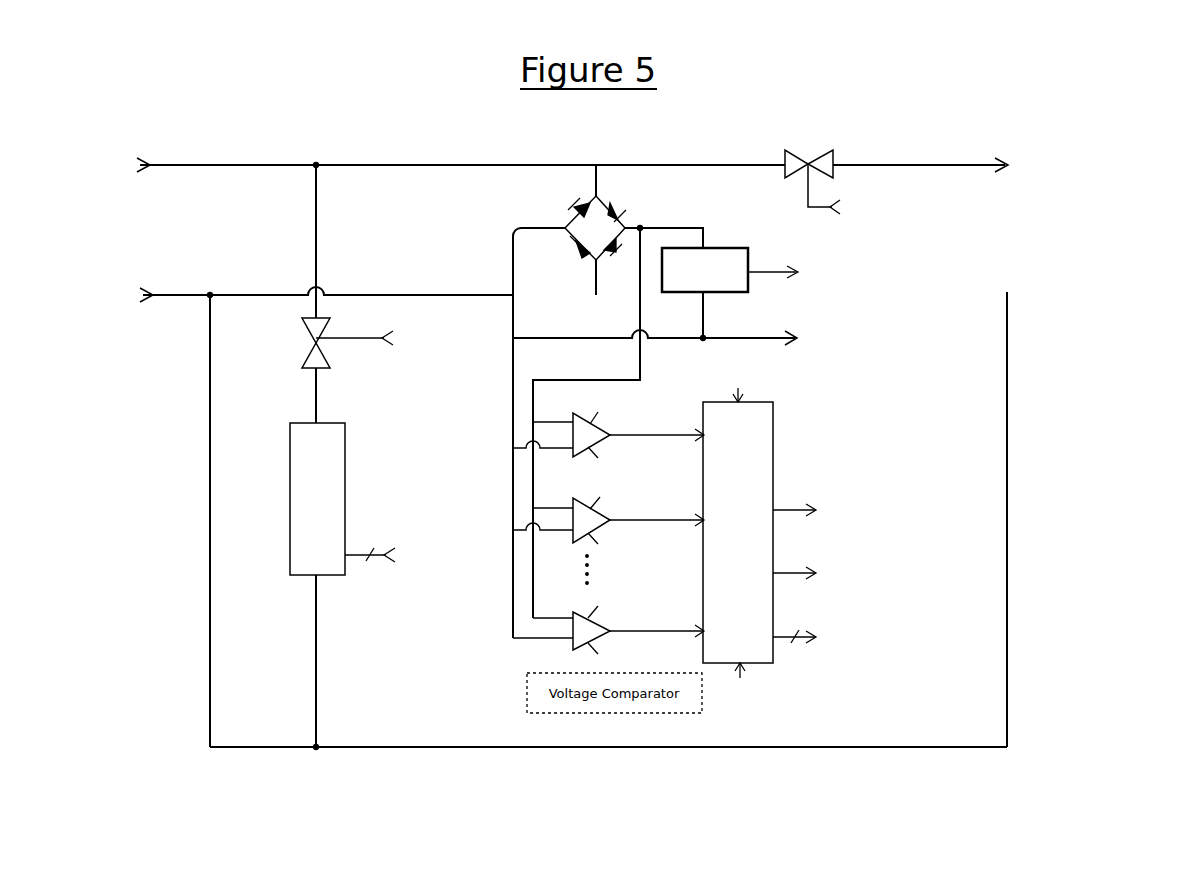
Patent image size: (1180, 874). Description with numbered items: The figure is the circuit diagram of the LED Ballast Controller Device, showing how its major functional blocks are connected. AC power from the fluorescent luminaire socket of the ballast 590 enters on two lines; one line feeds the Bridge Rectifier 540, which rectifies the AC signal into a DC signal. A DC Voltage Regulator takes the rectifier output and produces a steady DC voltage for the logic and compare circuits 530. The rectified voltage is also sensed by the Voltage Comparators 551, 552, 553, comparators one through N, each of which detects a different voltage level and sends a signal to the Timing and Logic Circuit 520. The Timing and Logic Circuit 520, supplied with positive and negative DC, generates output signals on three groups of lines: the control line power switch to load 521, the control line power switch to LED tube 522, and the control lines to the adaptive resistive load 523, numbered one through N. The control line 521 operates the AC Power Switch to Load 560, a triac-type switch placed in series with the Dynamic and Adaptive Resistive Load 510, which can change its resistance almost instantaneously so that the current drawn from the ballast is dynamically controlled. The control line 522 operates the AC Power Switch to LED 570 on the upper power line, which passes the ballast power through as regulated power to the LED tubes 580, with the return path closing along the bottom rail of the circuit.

The AC Power from the MEBal 590 is at (448, 230).
The AC Power Switch to LED 570 is at (890, 149).
The Control Line Power Switch to LED Tube 522 is at (875, 386).
The Regulated Power to LED Tubes 580 is at (1065, 482).
The Bridge Rectifier 540 is at (583, 208).
The DC Voltage for Logic and Compare circuits 530 is at (739, 286).
The Control Line Power Switch to Load 521 is at (639, 421).
The AC Power Switch to Load 560 is at (283, 294).
The Dynamic and Adaptive Resistive Load 510 is at (322, 466).
The Control Line to Adaptive Resistive Load 523 is at (653, 610).
The Voltage Comparator 1 551 is at (608, 434).
The Voltage Comparator 2 552 is at (608, 521).
The Voltage Comparator N 553 is at (608, 631).
The Timing and Logic Circuit 520 is at (768, 459).